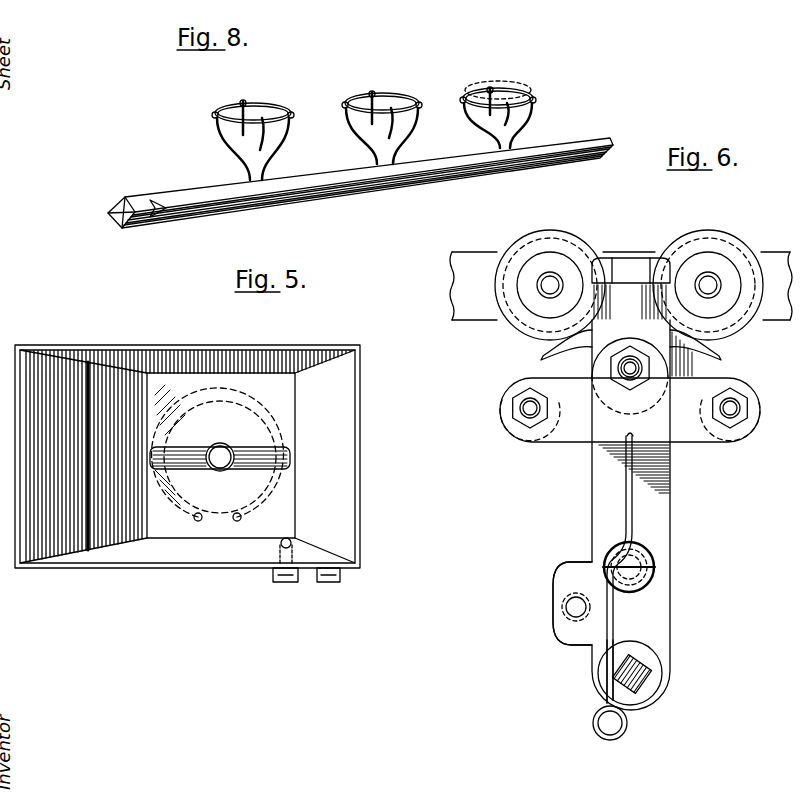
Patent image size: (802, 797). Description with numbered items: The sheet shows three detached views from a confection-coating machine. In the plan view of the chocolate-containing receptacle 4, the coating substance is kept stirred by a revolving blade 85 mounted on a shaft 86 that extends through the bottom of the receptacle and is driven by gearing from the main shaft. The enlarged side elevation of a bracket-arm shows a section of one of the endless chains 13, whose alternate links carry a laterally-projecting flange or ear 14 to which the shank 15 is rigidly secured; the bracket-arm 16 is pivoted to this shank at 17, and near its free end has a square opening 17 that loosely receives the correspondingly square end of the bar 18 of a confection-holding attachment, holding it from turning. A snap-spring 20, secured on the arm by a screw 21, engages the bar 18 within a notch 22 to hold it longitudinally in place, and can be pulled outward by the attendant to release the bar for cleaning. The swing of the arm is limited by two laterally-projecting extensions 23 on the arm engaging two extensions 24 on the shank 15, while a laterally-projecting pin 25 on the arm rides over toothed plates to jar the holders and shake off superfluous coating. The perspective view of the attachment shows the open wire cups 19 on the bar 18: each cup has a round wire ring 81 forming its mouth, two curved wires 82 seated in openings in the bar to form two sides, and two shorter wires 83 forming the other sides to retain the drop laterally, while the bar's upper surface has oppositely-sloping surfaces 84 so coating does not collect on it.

In FIG. 5, the chocolate-containing receptacle 4 is at (187, 463).
In FIG. 6, the endless chains 13 is at (479, 260).
In FIG. 6, the laterally-projecting flange or ear 14 is at (617, 297).
In FIG. 6, the shank 15 is at (600, 338).
In FIG. 6, the bracket-arm 16 is at (658, 527).
In FIG. 6, the pivot and square opening 17 is at (631, 375).
In FIG. 8, the bar 18 is at (577, 147).
In FIG. 6, the bar 18 is at (642, 685).
In FIG. 8, the open wire cups 19 is at (368, 117).
In FIG. 6, the snap-spring 20 is at (606, 628).
In FIG. 6, the screw 21 is at (655, 565).
In FIG. 8, the notch 22 is at (160, 199).
In FIG. 6, the notch 22 is at (612, 675).
In FIG. 6, the laterally-projecting extensions 23 is at (508, 396).
In FIG. 6, the extensions 24 is at (541, 357).
In FIG. 6, the laterally-projecting pin 25 is at (572, 608).
In FIG. 8, the round wire ring 81 is at (239, 105).
In FIG. 8, the wires 82 is at (224, 140).
In FIG. 8, the additional wires 83 is at (248, 115).
In FIG. 8, the oppositely-sloping surfaces 84 is at (118, 199).
In FIG. 5, the revolving blade 85 is at (188, 448).
In FIG. 5, the shaft 86 is at (220, 460).